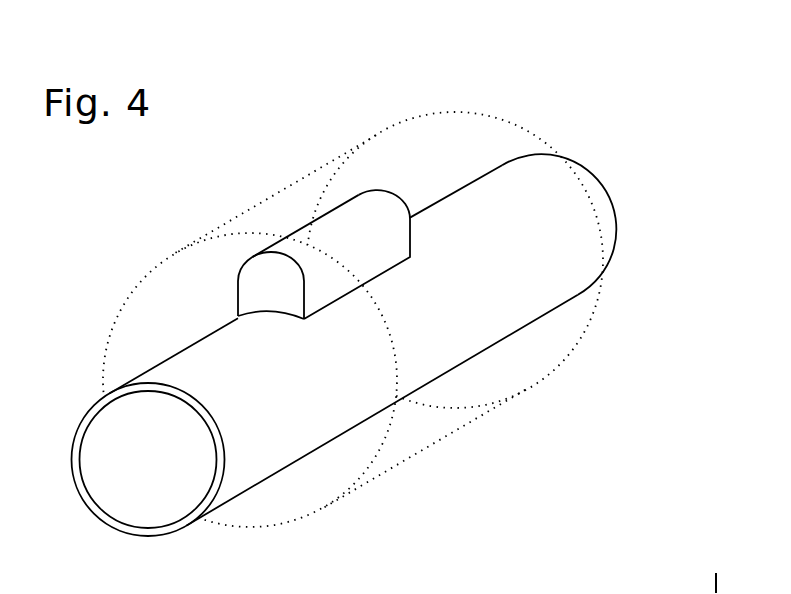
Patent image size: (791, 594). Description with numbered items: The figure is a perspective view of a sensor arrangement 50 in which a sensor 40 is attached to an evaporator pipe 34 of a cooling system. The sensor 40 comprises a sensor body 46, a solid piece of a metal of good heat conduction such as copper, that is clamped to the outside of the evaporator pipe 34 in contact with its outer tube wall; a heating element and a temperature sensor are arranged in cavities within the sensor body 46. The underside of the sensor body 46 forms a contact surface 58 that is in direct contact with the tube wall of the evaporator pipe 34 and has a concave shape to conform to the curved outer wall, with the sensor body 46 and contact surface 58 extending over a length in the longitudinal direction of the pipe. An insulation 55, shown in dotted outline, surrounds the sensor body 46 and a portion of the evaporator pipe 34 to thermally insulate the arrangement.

The evaporator pipe 34 is at (235, 491).
The sensor body 46 is at (367, 250).
The contact surface 58 is at (278, 319).
The sensor 40 is at (587, 72).
The sensor arrangement 50 is at (115, 227).
The insulation 55 is at (440, 438).